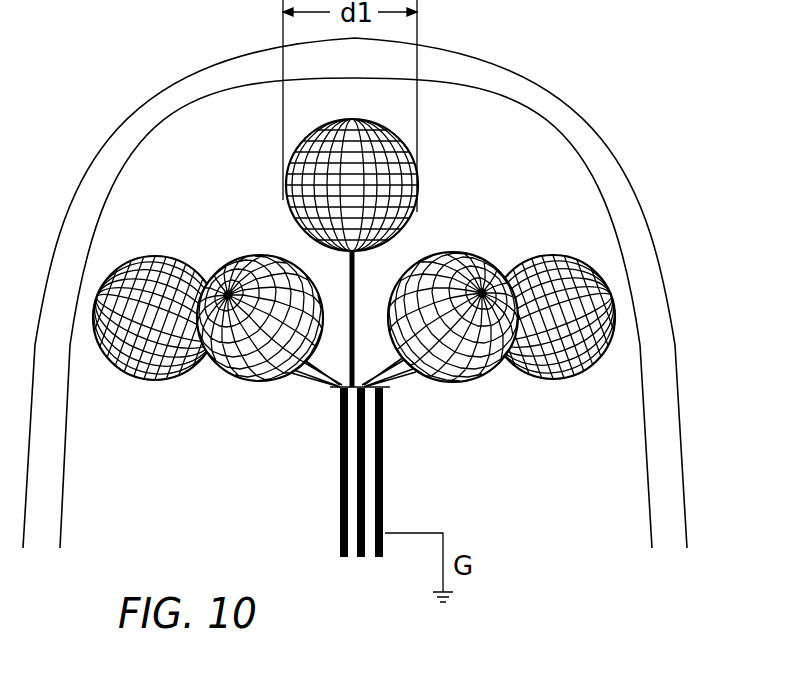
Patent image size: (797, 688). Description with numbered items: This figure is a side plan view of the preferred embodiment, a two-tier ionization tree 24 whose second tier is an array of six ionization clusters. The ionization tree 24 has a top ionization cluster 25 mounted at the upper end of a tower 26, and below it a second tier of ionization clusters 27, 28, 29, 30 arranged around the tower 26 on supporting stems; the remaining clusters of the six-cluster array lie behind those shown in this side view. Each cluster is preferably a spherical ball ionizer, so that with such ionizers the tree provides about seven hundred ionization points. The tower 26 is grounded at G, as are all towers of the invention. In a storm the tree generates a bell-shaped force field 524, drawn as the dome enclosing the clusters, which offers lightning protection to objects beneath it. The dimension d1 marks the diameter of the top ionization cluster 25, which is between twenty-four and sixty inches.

The force field 524 is at (530, 78).
The ionization tree 24 is at (455, 188).
The top ionization cluster 25 is at (288, 197).
The tower 26 is at (383, 468).
The second tier ionization cluster 27 is at (157, 255).
The second tier ionization cluster 28 is at (232, 378).
The second tier ionization cluster 29 is at (468, 255).
The second tier ionization cluster 30 is at (550, 251).